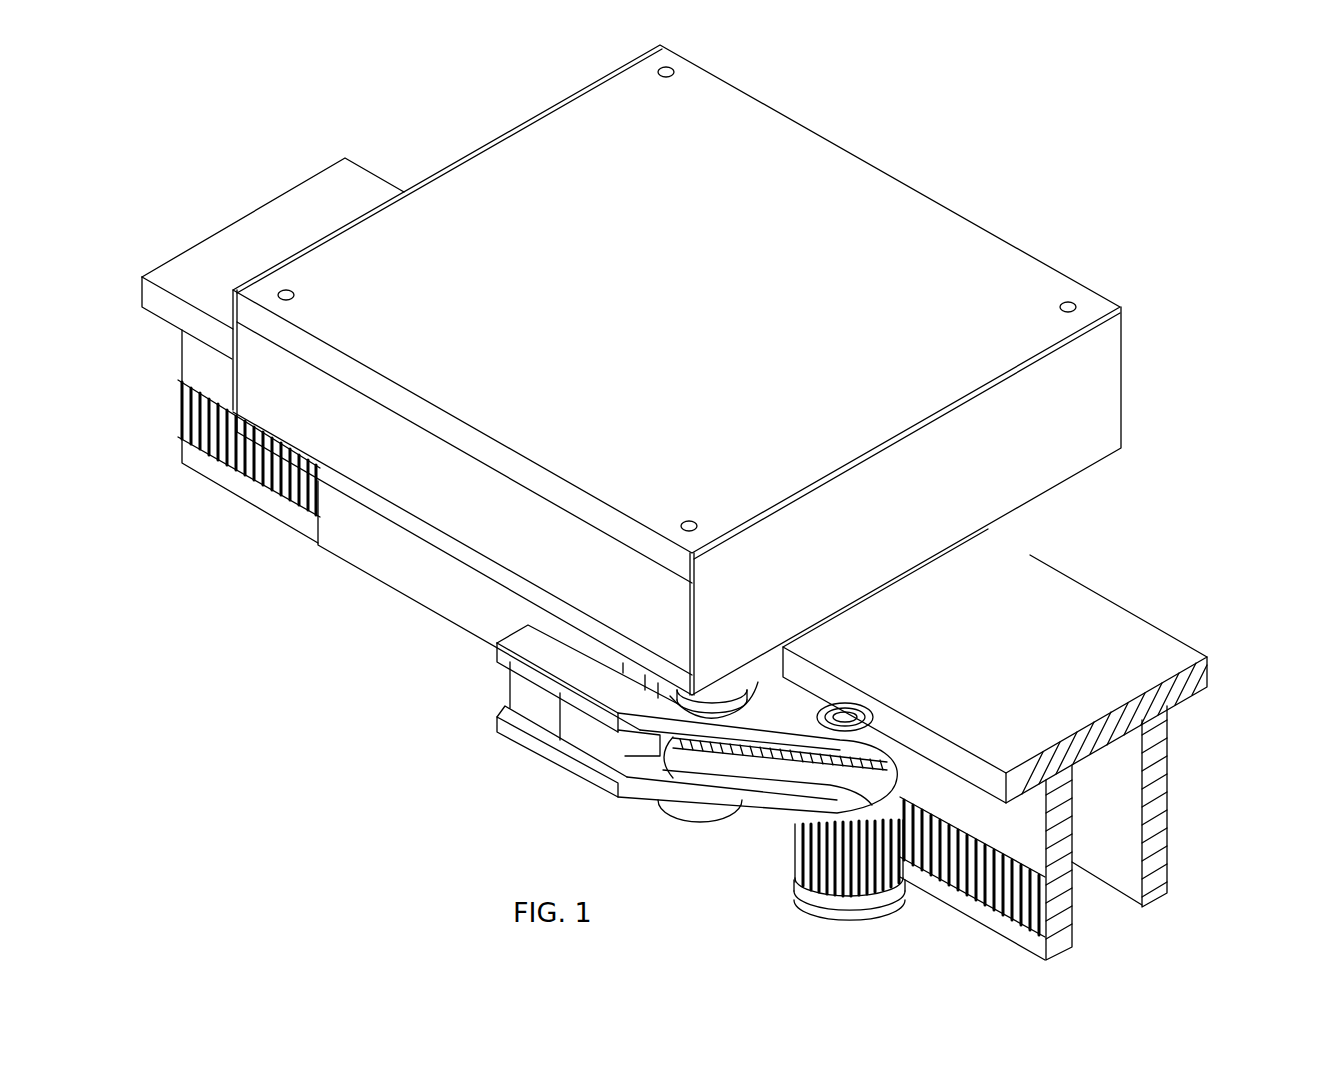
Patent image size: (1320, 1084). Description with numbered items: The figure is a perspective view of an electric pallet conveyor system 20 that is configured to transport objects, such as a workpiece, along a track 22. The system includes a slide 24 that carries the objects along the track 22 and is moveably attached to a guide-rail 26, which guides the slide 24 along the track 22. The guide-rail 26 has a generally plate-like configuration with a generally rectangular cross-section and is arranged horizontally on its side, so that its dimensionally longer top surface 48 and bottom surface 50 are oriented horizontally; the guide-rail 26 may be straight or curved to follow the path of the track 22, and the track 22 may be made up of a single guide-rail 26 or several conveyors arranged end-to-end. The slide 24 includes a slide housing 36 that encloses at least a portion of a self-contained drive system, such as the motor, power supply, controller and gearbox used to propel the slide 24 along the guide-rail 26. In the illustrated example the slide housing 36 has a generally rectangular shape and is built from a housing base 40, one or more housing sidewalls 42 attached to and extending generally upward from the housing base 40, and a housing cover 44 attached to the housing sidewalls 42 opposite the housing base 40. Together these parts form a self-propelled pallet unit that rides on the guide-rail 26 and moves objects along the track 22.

The electric pallet conveyor system 20 is at (348, 629).
The track 22 is at (1023, 739).
The slide 24 is at (672, 370).
The guide-rail 26 is at (1032, 553).
The slide housing 36 is at (1122, 368).
The housing base 40 is at (372, 501).
The housing sidewalls 42 is at (489, 511).
The housing cover 44 is at (688, 323).
The top surface 48 is at (1026, 676).
The bottom surface 50 is at (1192, 695).